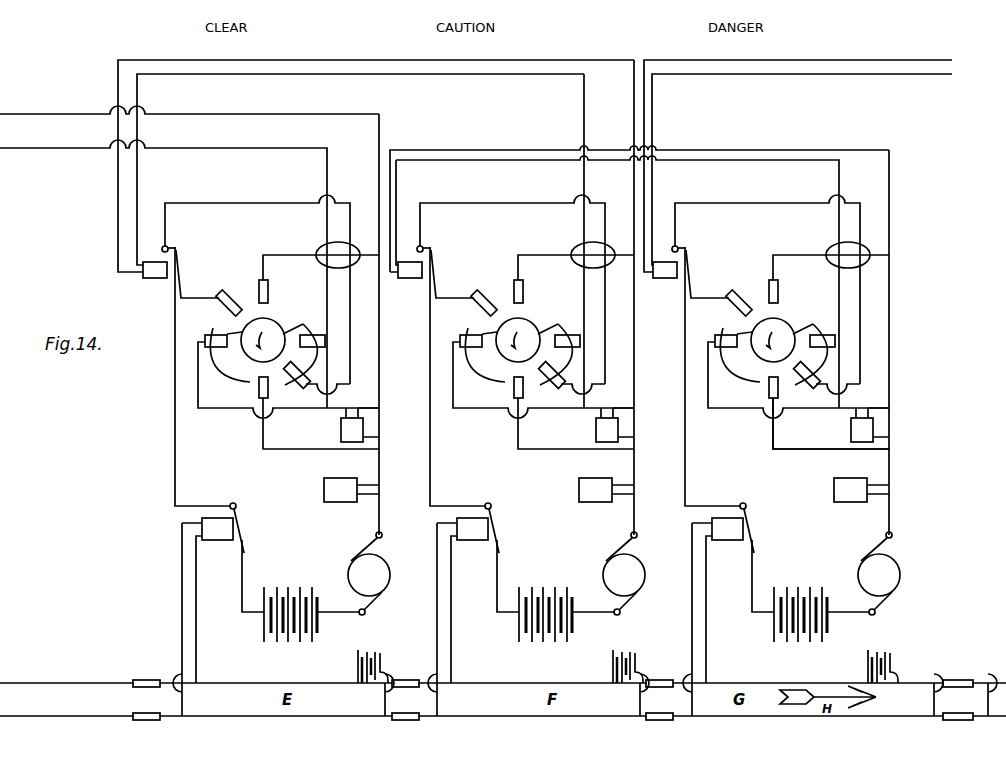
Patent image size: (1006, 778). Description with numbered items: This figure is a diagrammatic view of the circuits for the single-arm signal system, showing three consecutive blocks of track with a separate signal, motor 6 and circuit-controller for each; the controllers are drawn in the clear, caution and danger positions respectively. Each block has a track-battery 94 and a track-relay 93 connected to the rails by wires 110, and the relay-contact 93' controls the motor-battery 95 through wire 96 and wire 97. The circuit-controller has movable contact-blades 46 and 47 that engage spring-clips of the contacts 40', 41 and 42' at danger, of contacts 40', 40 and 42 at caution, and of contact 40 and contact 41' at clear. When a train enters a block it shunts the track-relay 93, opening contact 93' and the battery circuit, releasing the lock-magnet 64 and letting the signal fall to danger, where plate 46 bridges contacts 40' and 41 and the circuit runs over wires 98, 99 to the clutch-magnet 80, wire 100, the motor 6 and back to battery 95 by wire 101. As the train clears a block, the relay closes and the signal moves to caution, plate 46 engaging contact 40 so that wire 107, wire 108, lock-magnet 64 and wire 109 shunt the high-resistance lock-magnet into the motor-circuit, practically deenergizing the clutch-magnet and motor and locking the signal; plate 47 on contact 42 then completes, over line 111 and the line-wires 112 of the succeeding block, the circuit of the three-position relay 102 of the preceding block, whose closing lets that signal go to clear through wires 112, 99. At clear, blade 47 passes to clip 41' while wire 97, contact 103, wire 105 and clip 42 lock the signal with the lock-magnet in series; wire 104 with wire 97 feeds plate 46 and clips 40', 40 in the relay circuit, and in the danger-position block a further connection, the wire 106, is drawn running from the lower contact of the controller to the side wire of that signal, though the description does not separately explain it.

The motor 6 is at (903, 559).
The contact 40 is at (468, 333).
The contact 40' is at (484, 296).
The contact 41 is at (531, 291).
The contact 41' is at (559, 328).
The contact 42 is at (572, 383).
The contact 42' is at (558, 413).
The contact-blade 46 is at (485, 355).
The contact-blade 47 is at (556, 354).
The lock-magnet 64 is at (637, 436).
The clutch-magnet 80 is at (606, 500).
The track-relay 93 is at (462, 600).
The relay-contact 93' is at (492, 518).
The track-battery 94 is at (628, 656).
The motor-battery 95 is at (545, 605).
The wire 96 is at (751, 579).
The wire 97 is at (457, 376).
The wire 98 is at (576, 259).
The wire 99 is at (893, 345).
The wire 100 is at (635, 533).
The wire 101 is at (605, 611).
The three-position relay 102 is at (406, 280).
The contact 103 is at (435, 240).
The wire 104 is at (452, 282).
The wire 105 is at (512, 289).
The wire 106 is at (831, 433).
The wire 107 is at (543, 385).
The wire 108 is at (579, 425).
The wire 109 is at (895, 412).
The wire 110 is at (459, 619).
The line wire 111 is at (652, 184).
The line-wire 112 is at (535, 156).